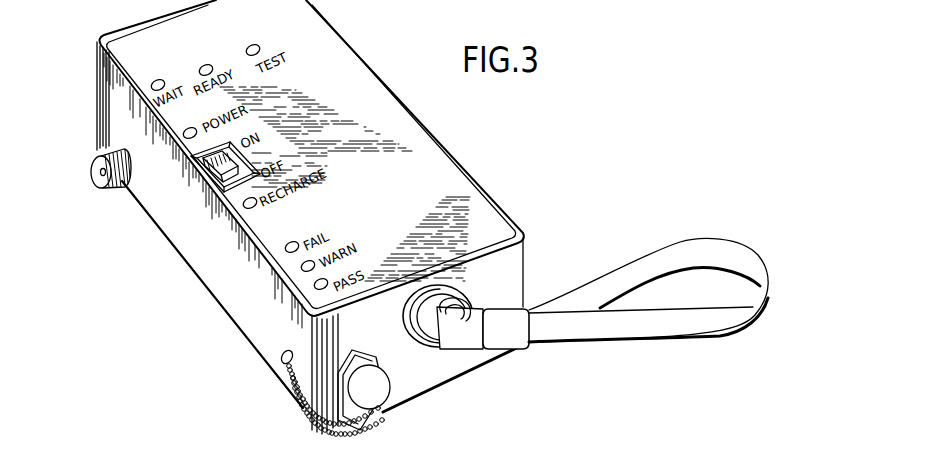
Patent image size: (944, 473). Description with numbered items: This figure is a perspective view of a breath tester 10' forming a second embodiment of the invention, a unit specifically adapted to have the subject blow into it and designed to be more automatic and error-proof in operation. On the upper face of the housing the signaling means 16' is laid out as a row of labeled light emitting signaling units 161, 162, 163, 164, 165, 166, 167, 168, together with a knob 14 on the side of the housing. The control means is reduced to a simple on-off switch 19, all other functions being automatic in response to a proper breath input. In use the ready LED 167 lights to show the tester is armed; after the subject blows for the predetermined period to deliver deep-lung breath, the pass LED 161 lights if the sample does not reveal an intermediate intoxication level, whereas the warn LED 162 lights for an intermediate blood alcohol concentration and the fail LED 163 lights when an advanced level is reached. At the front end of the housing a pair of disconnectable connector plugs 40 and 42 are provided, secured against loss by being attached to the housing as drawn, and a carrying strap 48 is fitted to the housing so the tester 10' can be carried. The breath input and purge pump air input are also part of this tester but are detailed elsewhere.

The breath tester 10' is at (312, 217).
The control knob 14 is at (92, 173).
The signaling means 16' is at (345, 173).
The on-off switch 19 is at (240, 149).
The connector plug 40 is at (384, 420).
The connector plug 42 is at (383, 388).
The carrying strap 48 is at (682, 242).
The pass LED 161 is at (316, 297).
The warn LED 162 is at (301, 271).
The fail LED 163 is at (292, 242).
The light emitting signaling unit 164 is at (242, 209).
The light emitting signaling unit 165 is at (192, 154).
The light emitting signaling unit 166 is at (158, 79).
The ready LED 167 is at (206, 64).
The light emitting signaling unit 168 is at (255, 44).